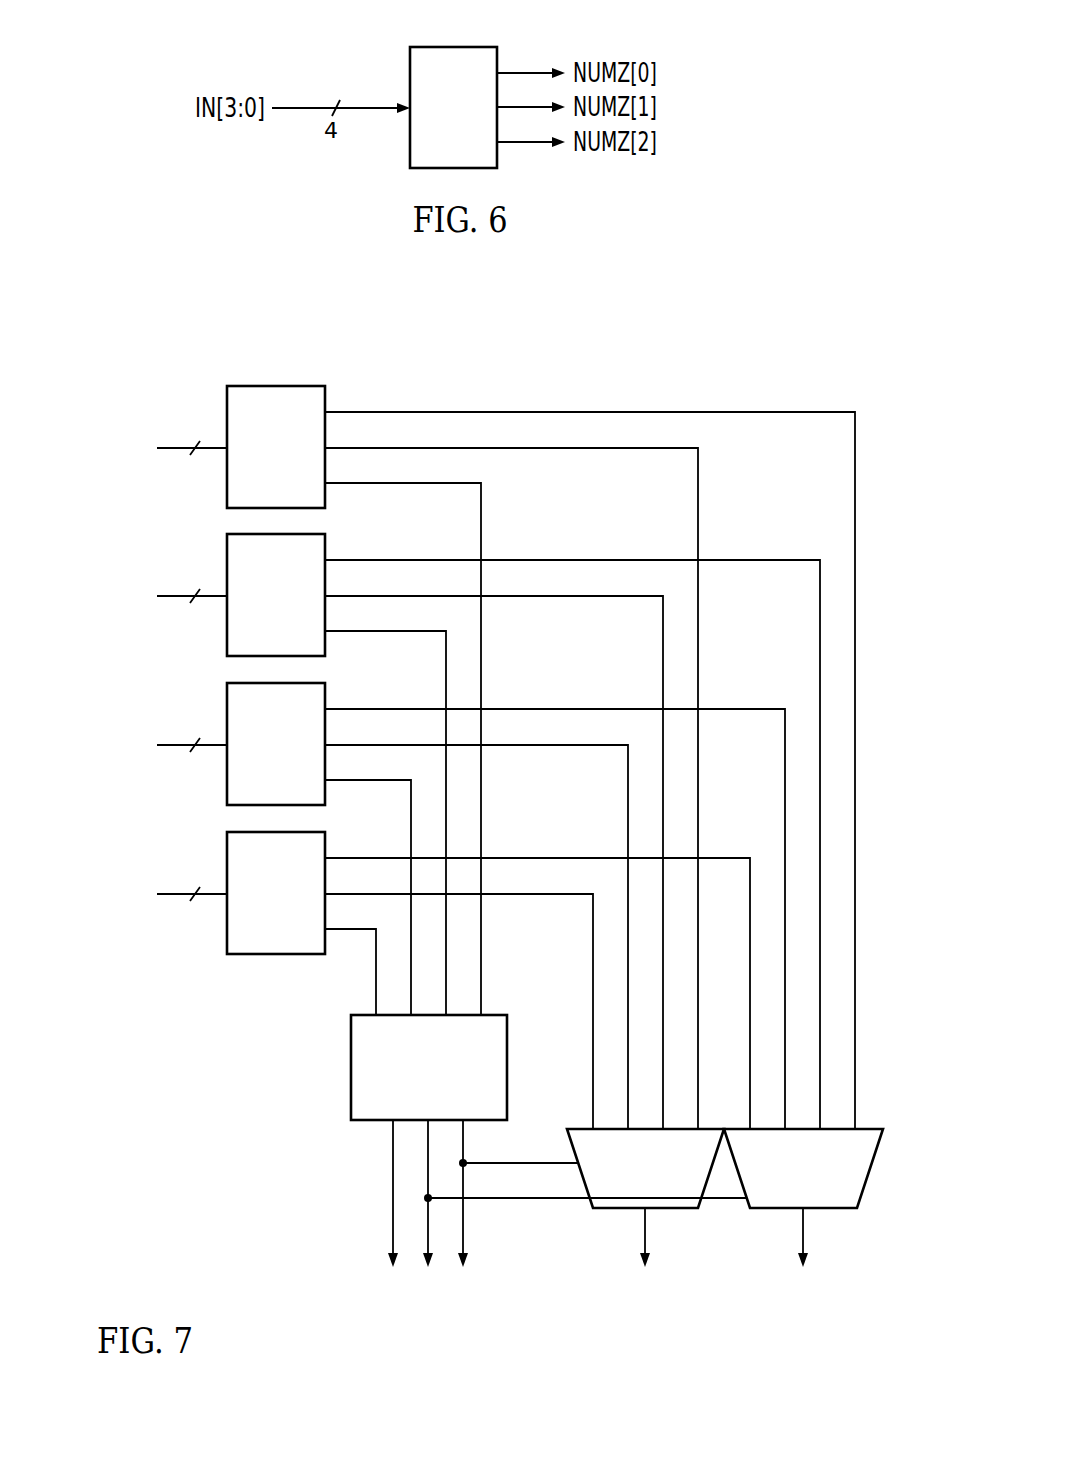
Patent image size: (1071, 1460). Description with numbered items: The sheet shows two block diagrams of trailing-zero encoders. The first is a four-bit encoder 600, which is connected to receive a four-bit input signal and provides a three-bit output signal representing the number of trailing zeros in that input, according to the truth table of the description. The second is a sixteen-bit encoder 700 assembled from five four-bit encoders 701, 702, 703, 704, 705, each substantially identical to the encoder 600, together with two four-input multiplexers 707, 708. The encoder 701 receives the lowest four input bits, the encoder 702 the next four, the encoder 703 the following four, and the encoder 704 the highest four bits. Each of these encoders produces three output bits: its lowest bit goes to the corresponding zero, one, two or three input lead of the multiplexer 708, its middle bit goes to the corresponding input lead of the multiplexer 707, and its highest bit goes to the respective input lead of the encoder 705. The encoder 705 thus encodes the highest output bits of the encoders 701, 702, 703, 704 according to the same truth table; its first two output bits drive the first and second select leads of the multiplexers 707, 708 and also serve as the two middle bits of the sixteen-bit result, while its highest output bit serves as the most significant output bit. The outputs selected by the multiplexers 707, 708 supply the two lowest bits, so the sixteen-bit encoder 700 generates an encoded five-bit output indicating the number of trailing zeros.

In FIG. 6, the four-bit encoder 600 is at (453, 47).
In FIG. 7, the sixteen-bit encoder 700 is at (849, 360).
In FIG. 7, the four-bit encoder 701 is at (227, 396).
In FIG. 7, the four-bit encoder 702 is at (227, 544).
In FIG. 7, the four-bit encoder 703 is at (227, 693).
In FIG. 7, the four-bit encoder 704 is at (227, 842).
In FIG. 7, the four-bit encoder 705 is at (351, 1046).
In FIG. 7, the four-input multiplexer 707 is at (680, 1209).
In FIG. 7, the four-input multiplexer 708 is at (838, 1209).